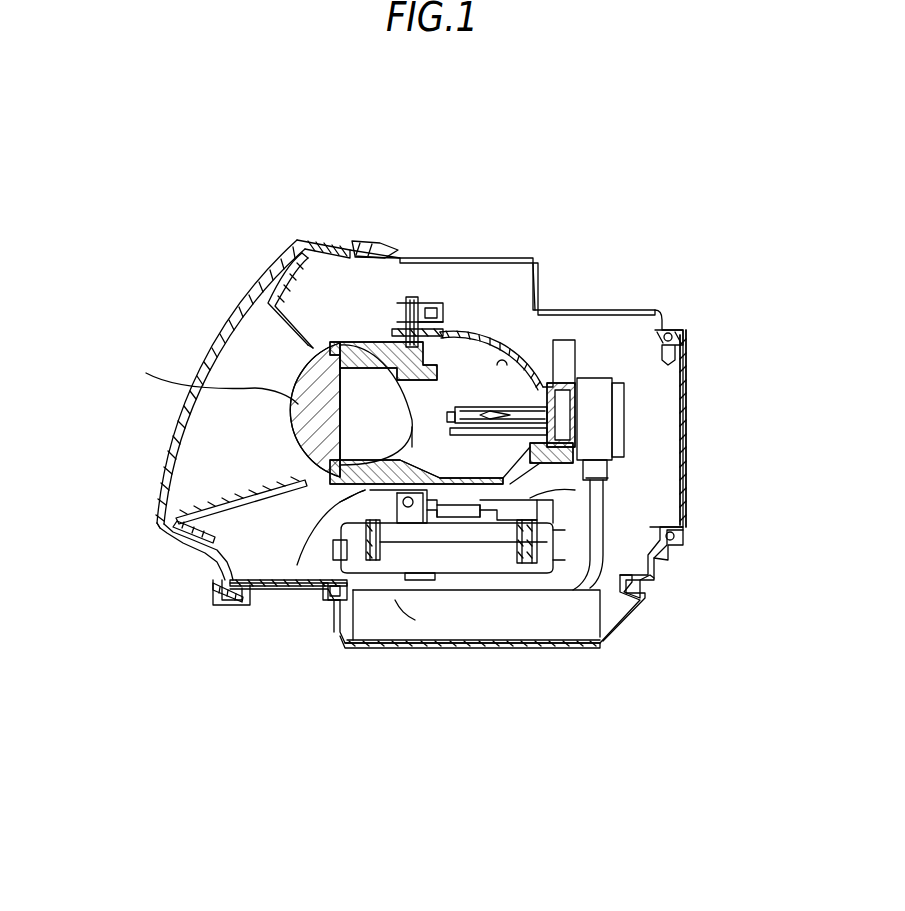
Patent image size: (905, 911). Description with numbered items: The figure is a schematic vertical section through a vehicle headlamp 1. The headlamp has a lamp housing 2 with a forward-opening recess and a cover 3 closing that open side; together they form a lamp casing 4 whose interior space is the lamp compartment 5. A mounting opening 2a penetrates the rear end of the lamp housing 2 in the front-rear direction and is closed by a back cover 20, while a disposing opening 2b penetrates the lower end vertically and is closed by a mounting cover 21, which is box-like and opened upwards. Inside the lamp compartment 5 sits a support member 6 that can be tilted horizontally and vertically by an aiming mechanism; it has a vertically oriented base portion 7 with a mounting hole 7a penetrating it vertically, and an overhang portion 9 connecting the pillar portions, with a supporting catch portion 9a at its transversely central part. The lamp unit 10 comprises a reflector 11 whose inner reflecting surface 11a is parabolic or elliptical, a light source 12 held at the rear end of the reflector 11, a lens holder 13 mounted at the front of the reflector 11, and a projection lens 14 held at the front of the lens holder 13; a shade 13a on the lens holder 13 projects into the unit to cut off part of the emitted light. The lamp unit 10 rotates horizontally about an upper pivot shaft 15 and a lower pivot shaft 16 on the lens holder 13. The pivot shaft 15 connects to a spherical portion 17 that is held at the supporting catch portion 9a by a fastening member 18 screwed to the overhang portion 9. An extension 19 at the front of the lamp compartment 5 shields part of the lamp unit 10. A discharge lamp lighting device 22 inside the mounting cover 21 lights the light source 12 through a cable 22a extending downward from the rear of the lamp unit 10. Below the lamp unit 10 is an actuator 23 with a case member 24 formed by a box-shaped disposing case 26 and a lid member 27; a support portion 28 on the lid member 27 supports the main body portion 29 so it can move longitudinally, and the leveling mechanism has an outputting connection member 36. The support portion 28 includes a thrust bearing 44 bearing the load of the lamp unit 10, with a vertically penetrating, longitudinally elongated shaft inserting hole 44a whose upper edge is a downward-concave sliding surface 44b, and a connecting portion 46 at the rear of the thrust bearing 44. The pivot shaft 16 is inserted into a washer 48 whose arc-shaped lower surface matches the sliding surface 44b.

The vehicle headlamp 1 is at (652, 150).
The lamp housing 2 is at (403, 260).
The mounting opening 2a is at (670, 361).
The disposing opening 2b is at (332, 598).
The cover 3 is at (327, 238).
The lamp casing 4 is at (378, 165).
The lamp compartment 5 is at (242, 442).
The support member 6 is at (590, 487).
The base portion 7 is at (585, 495).
The mounting hole 7a is at (595, 492).
The overhang portion 9 is at (473, 330).
The supporting catch portion 9a is at (441, 328).
The lamp unit 10 is at (500, 357).
The reflector 11 is at (508, 408).
The reflecting surface 11a is at (553, 380).
The light source 12 is at (612, 378).
The lens holder 13 is at (262, 292).
The shade 13a is at (318, 372).
The projection lens 14 is at (211, 380).
The pivot shaft 15 is at (430, 302).
The pivot shaft 16 is at (383, 487).
The spherical portion 17 is at (412, 296).
The fastening member 18 is at (443, 342).
The extension 19 is at (222, 510).
The back cover 20 is at (686, 443).
The mounting cover 21 is at (437, 637).
The discharge lamp lighting device 22 is at (543, 633).
The cable 22a is at (600, 533).
The actuator 23 is at (390, 620).
The case member 24 is at (420, 550).
The disposing case 26 is at (512, 513).
The lid member 27 is at (562, 600).
The support portion 28 is at (480, 553).
The main body portion 29 is at (560, 590).
The outputting connection member 36 is at (377, 593).
The thrust bearing 44 is at (360, 505).
The shaft inserting hole 44a is at (472, 508).
The sliding surface 44b is at (443, 517).
The connecting portion 46 is at (548, 560).
The washer 48 is at (297, 565).